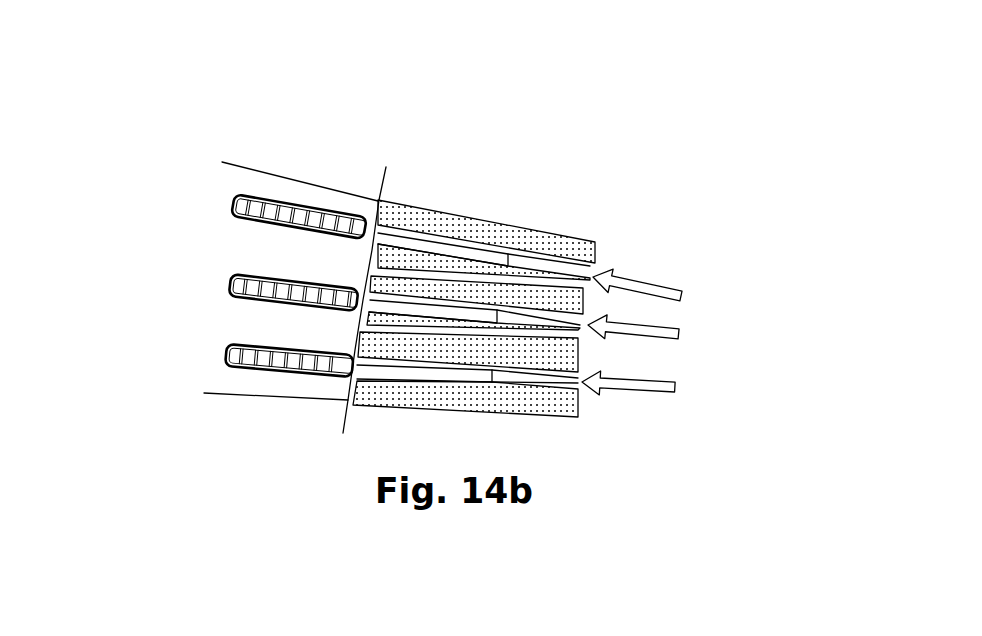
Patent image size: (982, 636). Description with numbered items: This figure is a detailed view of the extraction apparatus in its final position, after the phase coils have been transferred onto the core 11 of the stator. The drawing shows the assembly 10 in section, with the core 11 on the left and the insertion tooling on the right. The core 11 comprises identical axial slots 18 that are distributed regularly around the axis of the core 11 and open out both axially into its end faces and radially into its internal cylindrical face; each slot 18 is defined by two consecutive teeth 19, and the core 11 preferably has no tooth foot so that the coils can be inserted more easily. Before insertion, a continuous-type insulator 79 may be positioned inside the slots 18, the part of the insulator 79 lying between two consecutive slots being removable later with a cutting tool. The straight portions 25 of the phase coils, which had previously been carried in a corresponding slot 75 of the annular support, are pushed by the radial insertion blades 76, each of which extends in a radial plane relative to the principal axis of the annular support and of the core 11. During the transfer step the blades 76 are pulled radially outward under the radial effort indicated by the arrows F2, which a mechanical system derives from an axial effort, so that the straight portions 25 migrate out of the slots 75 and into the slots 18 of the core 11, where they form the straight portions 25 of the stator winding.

The actuator assembly 10 is at (243, 106).
The core 11 is at (236, 385).
The axial slots 18 is at (235, 213).
The teeth 19 is at (282, 192).
The straight portions 25 is at (307, 207).
The slot of the annular support 75 is at (447, 213).
The radial insertion blades 76 is at (535, 305).
The insulator 79 is at (386, 172).
The arrows F2 is at (676, 386).